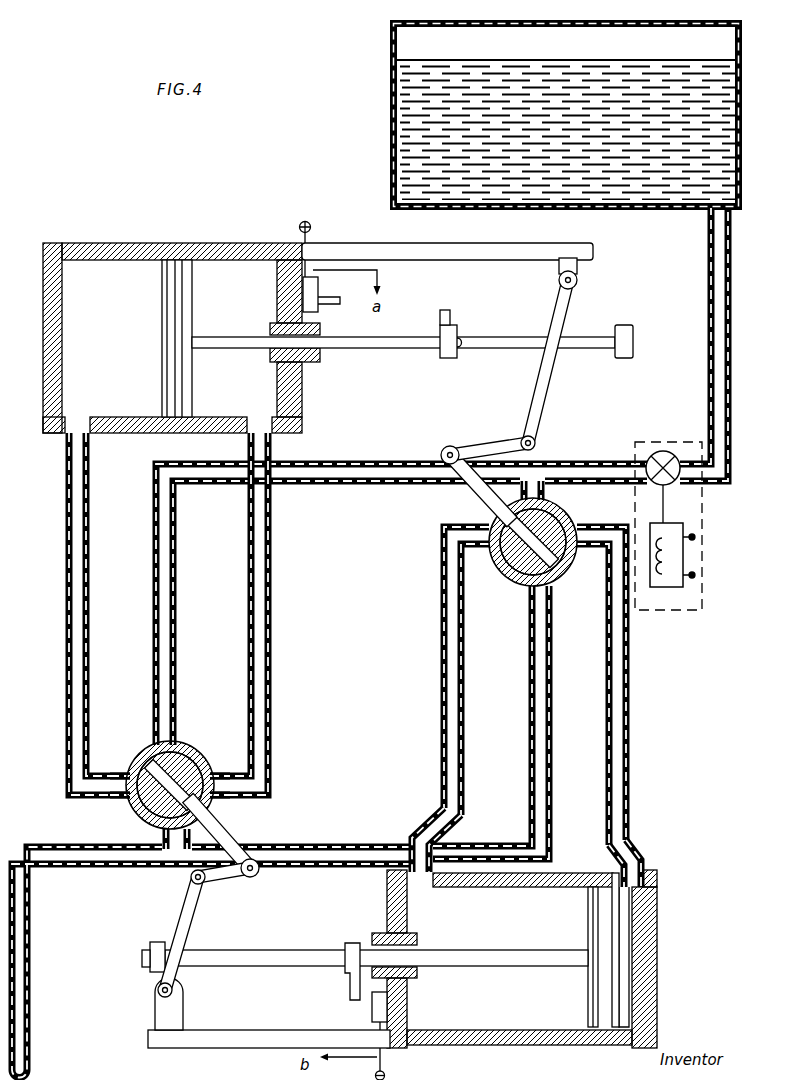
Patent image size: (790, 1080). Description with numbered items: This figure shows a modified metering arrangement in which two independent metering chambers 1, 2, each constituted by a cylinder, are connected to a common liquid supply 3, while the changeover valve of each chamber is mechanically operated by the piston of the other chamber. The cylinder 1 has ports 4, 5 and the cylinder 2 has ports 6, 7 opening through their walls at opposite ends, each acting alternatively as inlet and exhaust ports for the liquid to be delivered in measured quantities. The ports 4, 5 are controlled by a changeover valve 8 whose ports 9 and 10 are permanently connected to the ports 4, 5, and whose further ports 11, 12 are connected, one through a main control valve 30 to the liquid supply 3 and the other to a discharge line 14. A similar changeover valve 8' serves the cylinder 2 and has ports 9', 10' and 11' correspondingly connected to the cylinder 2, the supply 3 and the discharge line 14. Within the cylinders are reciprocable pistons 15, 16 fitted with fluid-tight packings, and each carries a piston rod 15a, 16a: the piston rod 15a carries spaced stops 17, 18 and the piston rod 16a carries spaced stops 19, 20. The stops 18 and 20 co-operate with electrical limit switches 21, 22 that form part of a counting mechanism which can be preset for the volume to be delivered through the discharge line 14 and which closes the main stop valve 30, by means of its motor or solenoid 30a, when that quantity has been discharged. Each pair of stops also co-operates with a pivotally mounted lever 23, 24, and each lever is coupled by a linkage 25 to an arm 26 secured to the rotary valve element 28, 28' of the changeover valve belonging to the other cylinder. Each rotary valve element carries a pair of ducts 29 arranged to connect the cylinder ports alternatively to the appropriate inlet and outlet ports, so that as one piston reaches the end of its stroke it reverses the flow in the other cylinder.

The metering chamber 1 is at (106, 246).
The metering chamber 2 is at (512, 1045).
The liquid supply 3 is at (390, 128).
The port 4 is at (80, 417).
The port 5 is at (258, 417).
The port 6 is at (418, 888).
The port 7 is at (640, 887).
The changeover valve 8 is at (173, 782).
The changeover valve 8' is at (533, 560).
The port 9 is at (115, 773).
The port 9' is at (467, 658).
The port 10 is at (221, 776).
The port 10' is at (601, 679).
The inlet port 11 is at (383, 605).
The inlet port 11' is at (555, 492).
The outlet port 12 is at (148, 823).
The discharge line 14 is at (78, 862).
The piston 15 is at (162, 332).
The piston rod 15a is at (371, 348).
The piston 16 is at (588, 913).
The piston rod 16a is at (290, 953).
The stop 17 is at (623, 325).
The stop 18 is at (441, 318).
The stop 19 is at (147, 943).
The stop 20 is at (345, 941).
The electrical limit switch 21 is at (320, 288).
The electrical limit switch 22 is at (372, 1010).
The pivotally mounted lever 23 is at (540, 393).
The pivotally mounted lever 24 is at (182, 910).
The linkage 25 is at (483, 449).
The arm 26 is at (220, 827).
The rotary valve element 28 is at (139, 787).
The rotary valve element 28' is at (554, 535).
The duct 29 is at (503, 562).
The main control valve 30 is at (663, 451).
The motor or solenoid 30a is at (667, 558).